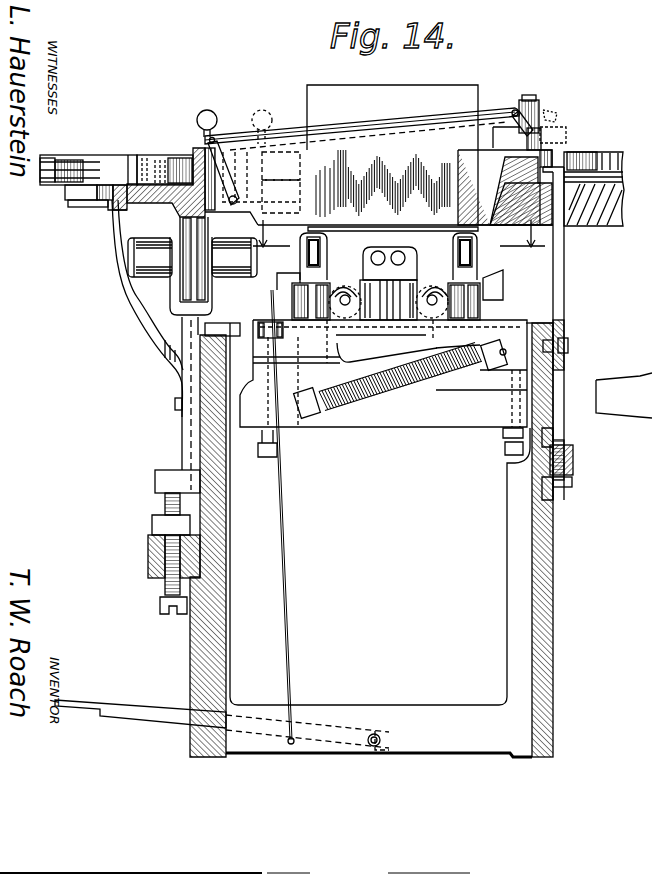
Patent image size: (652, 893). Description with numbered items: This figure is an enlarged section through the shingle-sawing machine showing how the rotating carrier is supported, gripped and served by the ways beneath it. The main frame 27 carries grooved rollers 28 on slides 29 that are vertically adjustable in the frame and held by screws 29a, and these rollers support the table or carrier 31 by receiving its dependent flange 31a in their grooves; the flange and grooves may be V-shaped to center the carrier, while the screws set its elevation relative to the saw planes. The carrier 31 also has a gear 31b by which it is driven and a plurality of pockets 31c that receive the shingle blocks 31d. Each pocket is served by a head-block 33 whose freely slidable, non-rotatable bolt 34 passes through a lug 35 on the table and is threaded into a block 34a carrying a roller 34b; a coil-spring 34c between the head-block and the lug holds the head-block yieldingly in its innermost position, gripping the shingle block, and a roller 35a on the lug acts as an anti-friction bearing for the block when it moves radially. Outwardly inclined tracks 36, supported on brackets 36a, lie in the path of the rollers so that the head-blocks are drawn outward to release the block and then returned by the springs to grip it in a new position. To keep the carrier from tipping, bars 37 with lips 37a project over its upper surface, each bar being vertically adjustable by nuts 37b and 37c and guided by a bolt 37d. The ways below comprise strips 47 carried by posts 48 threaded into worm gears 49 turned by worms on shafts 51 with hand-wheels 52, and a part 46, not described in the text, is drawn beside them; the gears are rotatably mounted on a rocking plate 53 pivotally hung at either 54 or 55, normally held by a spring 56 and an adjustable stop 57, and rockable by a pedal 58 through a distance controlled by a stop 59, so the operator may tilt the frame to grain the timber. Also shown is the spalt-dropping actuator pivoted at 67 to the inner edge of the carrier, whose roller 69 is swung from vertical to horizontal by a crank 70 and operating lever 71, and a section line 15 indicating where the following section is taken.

The section line 15 is at (399, 233).
The main frame 27 is at (225, 550).
The grooved roller 28 is at (180, 293).
The slide 29 is at (184, 432).
The screw 29a is at (167, 557).
The table or carrier 31 is at (137, 203).
The dependent flange 31a is at (181, 218).
The gear 31b is at (120, 207).
The pocket 31c is at (483, 205).
The shingle block 31d is at (378, 93).
The head-block 33 is at (292, 160).
The bolt 34 is at (193, 158).
The block 34a is at (110, 207).
The roller 34b is at (67, 193).
The coil-spring 34c is at (165, 157).
The lug 35 is at (135, 157).
The roller 35a is at (83, 152).
The track 36 is at (108, 188).
The bracket 36a is at (117, 280).
The bar 37 is at (566, 297).
The lip 37a is at (551, 167).
The nut 37b is at (574, 447).
The nut 37c is at (575, 480).
The bolt 37d is at (569, 348).
The bracket 46 is at (502, 278).
The strip 47 is at (462, 238).
The post 48 is at (455, 256).
The worm gear 49 is at (480, 312).
The shaft 51 is at (437, 306).
The hand-wheel 52 is at (389, 282).
The rocking plate 53 is at (320, 358).
The pivot 54 is at (378, 251).
The pivot 55 is at (398, 251).
The spring 56 is at (374, 398).
The adjustable stop 57 is at (511, 380).
The pedal 58 is at (140, 712).
The stop 59 is at (268, 385).
The pivot 67 is at (527, 132).
The roller 69 is at (533, 98).
The crank 70 is at (510, 108).
The operating lever 71 is at (214, 118).